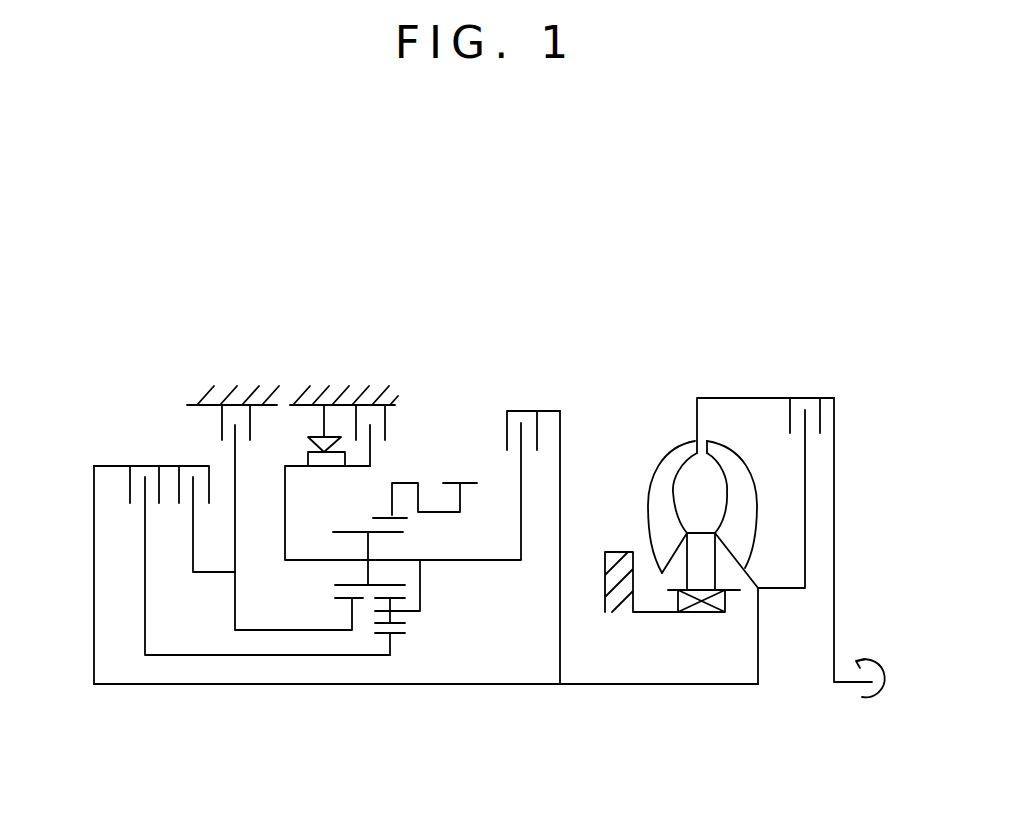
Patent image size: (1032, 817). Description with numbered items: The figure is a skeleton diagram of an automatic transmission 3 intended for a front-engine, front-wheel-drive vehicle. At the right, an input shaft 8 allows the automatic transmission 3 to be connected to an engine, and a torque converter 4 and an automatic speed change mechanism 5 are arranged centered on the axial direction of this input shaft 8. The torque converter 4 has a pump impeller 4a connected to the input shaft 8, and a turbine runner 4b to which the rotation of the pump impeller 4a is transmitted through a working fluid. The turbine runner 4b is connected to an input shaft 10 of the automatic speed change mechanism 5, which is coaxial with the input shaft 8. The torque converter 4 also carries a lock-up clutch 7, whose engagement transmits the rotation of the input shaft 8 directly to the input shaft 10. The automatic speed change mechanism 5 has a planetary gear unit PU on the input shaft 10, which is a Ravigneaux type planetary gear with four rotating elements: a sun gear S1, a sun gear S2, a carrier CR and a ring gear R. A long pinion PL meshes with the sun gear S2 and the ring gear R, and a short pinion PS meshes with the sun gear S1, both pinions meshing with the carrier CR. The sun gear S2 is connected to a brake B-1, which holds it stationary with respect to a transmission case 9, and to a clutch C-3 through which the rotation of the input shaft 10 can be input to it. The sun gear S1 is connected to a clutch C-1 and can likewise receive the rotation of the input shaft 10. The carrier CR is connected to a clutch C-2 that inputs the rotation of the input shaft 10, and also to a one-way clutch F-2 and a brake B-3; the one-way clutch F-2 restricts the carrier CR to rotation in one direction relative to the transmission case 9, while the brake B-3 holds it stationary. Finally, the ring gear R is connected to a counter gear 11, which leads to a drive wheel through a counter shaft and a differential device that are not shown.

The automatic transmission 3 is at (432, 298).
The torque converter 4 is at (658, 428).
The pump impeller 4a is at (648, 502).
The turbine runner 4b is at (757, 490).
The automatic speed change mechanism 5 is at (502, 366).
The lock-up clutch 7 is at (808, 395).
The input shaft 8 is at (835, 540).
The transmission case 9 is at (191, 392).
The input shaft 10 is at (620, 685).
The counter gear 11 is at (468, 485).
The planetary gear unit PU is at (410, 456).
The long pinion PL is at (341, 531).
The ring gear R is at (387, 518).
The carrier CR is at (433, 572).
The short pinion PS is at (401, 617).
The sun gear S1 is at (401, 640).
The sun gear S2 is at (335, 599).
The clutch C-1 is at (242, 547).
The clutch C-2 is at (533, 417).
The clutch C-3 is at (200, 505).
The brake B-1 is at (283, 495).
The brake B-3 is at (372, 413).
The one-way clutch F-2 is at (344, 413).